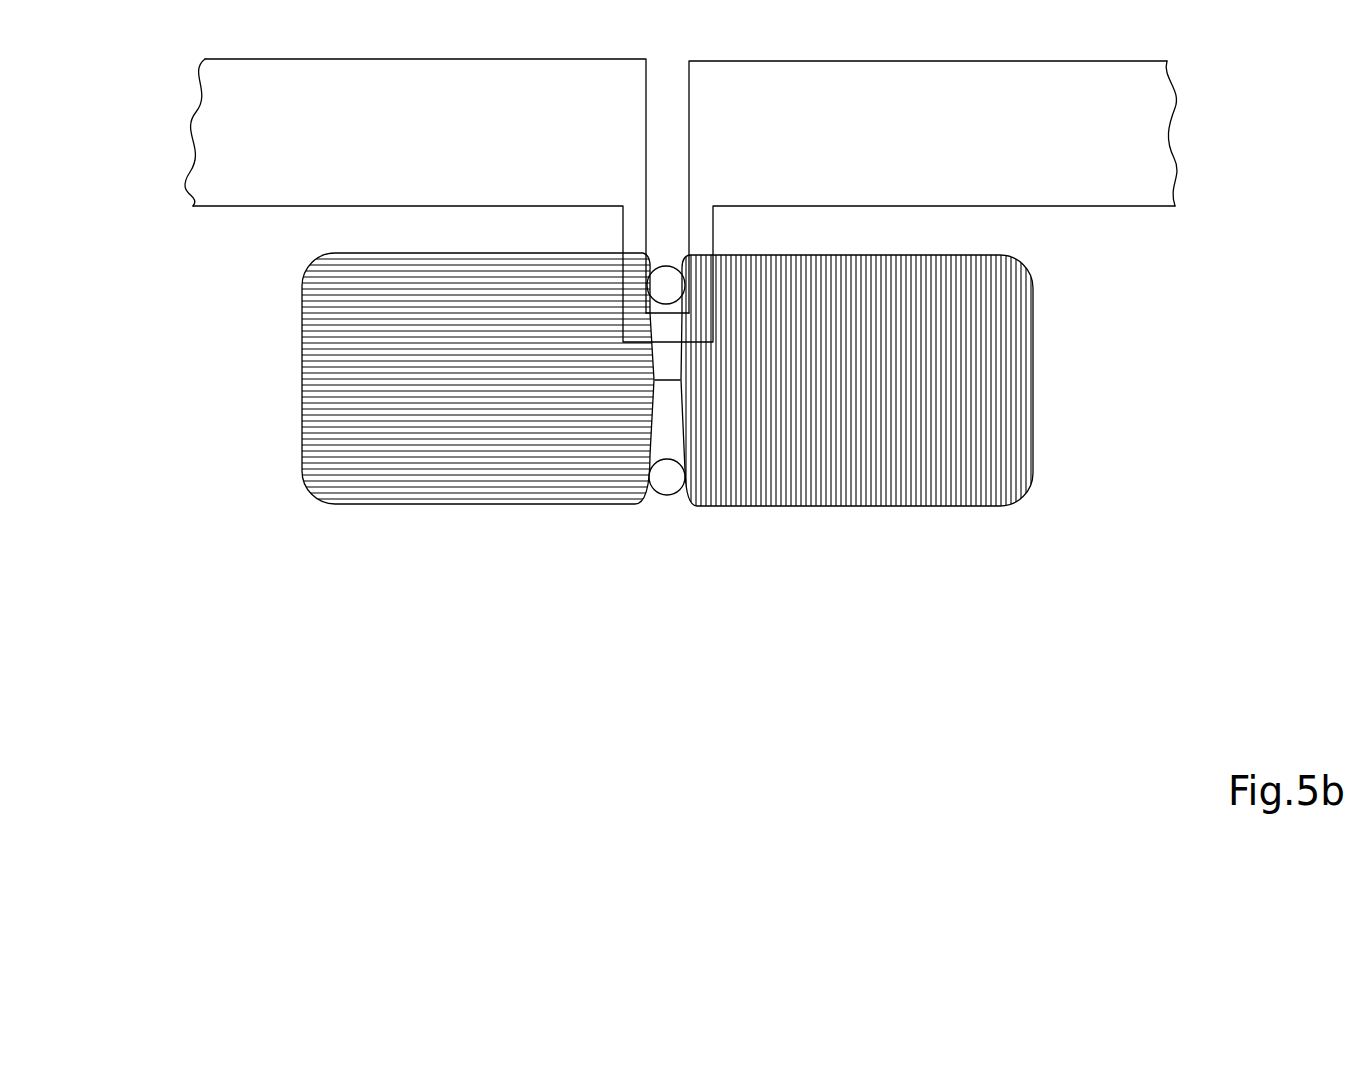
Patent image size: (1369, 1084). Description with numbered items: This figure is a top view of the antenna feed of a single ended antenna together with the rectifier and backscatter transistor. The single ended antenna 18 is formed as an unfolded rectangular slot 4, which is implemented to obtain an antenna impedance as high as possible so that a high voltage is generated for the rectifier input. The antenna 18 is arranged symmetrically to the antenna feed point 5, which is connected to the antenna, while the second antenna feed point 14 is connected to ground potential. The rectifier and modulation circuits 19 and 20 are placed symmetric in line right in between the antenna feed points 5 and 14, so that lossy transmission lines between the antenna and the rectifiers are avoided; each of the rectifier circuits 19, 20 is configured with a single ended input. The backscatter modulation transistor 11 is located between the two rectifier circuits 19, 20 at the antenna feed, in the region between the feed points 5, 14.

The unfolded rectangular slot 4 is at (230, 180).
The single ended antenna 18 is at (1131, 208).
The antenna feed point 5 is at (665, 287).
The second antenna feed point 14 is at (667, 482).
The rectifier circuit 19 is at (503, 398).
The rectifier circuit 20 is at (887, 428).
The backscatter modulation transistor 11 is at (665, 382).